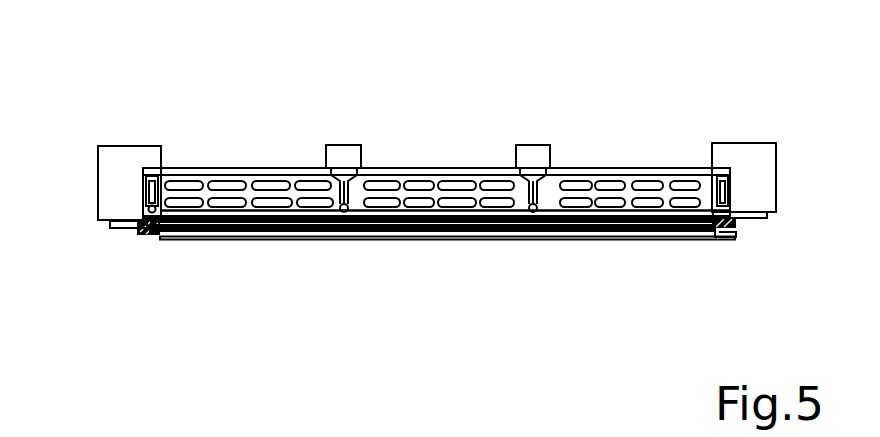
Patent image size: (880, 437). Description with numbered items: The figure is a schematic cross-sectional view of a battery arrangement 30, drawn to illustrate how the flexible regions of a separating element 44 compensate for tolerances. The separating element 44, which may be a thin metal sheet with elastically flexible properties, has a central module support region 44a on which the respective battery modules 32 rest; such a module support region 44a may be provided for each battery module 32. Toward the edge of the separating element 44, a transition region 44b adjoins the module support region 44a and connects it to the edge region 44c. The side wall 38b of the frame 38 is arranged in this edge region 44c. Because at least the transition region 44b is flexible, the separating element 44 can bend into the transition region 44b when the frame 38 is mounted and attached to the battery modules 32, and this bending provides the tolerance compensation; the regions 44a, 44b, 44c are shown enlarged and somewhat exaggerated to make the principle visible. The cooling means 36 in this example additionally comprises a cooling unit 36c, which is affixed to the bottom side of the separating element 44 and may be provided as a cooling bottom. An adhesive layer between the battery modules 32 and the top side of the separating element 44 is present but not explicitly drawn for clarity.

The battery arrangement 30 is at (190, 98).
The battery module 32 is at (270, 185).
The cooling means 36 is at (458, 238).
The cooling unit 36c is at (562, 240).
The frame 38 is at (343, 155).
The side wall 38b is at (125, 168).
The separating element 44 is at (438, 255).
The module support region 44a is at (343, 214).
The transition region 44b is at (153, 240).
The edge region 44c is at (117, 228).